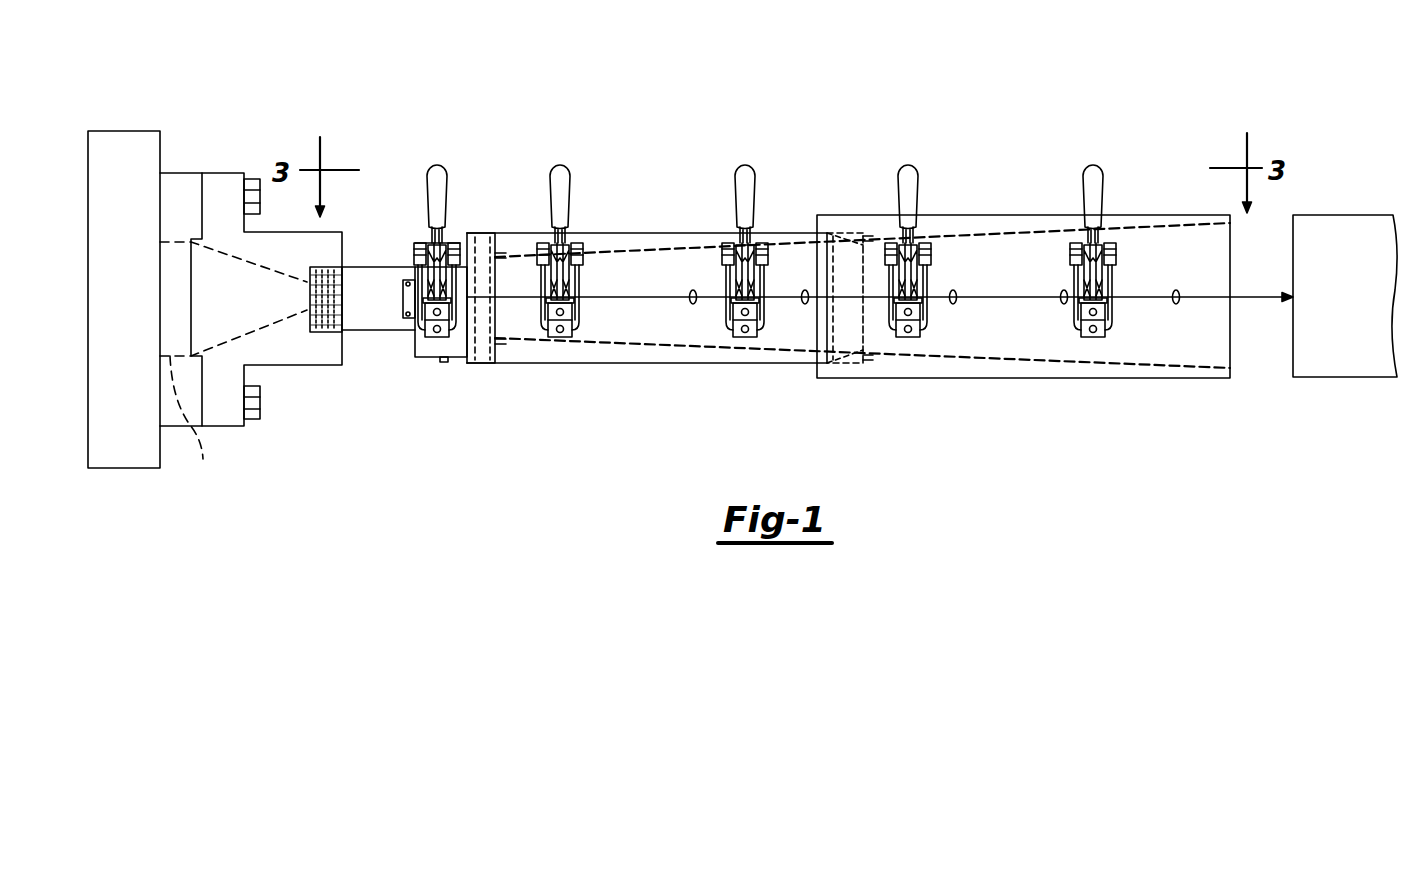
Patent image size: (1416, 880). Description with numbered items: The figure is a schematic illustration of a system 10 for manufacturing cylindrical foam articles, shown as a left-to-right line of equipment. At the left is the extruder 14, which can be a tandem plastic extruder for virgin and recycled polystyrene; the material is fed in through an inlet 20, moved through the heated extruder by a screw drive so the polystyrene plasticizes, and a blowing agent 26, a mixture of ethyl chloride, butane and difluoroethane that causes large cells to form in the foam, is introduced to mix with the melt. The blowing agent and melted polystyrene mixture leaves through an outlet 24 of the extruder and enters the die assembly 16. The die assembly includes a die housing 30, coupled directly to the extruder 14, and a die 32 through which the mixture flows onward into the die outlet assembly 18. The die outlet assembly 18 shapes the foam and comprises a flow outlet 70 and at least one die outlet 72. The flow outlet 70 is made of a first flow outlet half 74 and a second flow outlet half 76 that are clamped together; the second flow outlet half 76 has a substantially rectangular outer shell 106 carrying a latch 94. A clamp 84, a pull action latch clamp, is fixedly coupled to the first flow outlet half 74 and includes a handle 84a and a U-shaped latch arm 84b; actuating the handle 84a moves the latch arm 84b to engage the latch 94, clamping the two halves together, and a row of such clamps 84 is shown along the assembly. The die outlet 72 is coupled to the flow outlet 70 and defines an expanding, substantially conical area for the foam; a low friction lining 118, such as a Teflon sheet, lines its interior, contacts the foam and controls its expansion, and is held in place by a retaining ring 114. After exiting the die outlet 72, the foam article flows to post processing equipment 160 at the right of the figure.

The system 10 is at (284, 75).
The extruder 14 is at (128, 237).
The die assembly 16 is at (353, 195).
The die outlet assembly 18 is at (808, 160).
The inlet 20 is at (104, 122).
The outlet 24 is at (190, 421).
The blowing agent 26 is at (136, 122).
The die housing 30 is at (269, 382).
The die 32 is at (355, 333).
The flow outlet 70 is at (458, 218).
The die outlet 72 is at (783, 217).
The first flow outlet half 74 is at (417, 233).
The second flow outlet half 76 is at (422, 358).
The clamp 84 is at (451, 163).
The handle 84a is at (447, 183).
The U-shaped latch arm 84b is at (457, 293).
The latch 94 is at (452, 330).
The outer shell 106 is at (460, 363).
The retaining ring 114 is at (498, 345).
The lining 118 is at (637, 251).
The post processing equipment 160 is at (1363, 318).